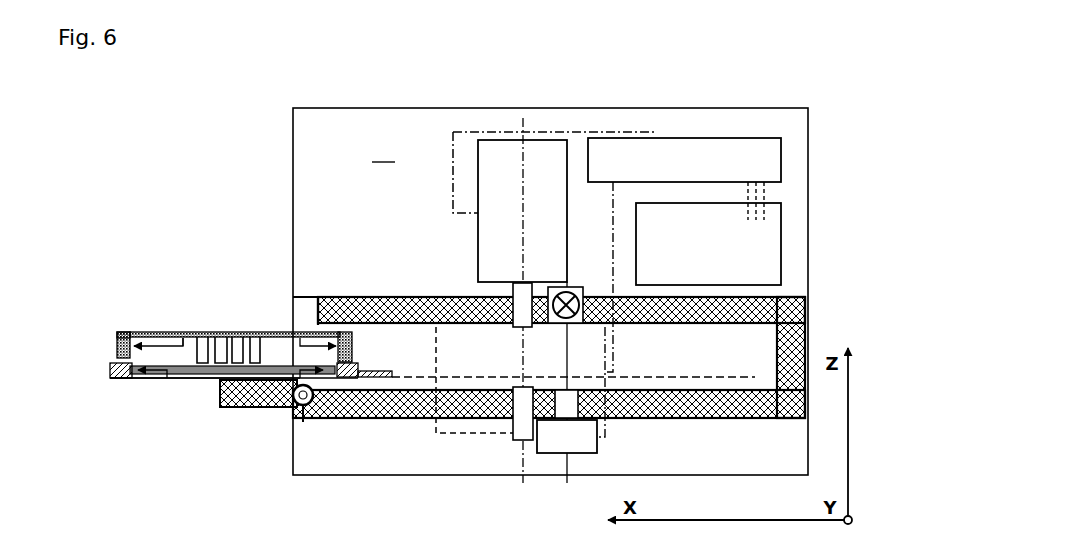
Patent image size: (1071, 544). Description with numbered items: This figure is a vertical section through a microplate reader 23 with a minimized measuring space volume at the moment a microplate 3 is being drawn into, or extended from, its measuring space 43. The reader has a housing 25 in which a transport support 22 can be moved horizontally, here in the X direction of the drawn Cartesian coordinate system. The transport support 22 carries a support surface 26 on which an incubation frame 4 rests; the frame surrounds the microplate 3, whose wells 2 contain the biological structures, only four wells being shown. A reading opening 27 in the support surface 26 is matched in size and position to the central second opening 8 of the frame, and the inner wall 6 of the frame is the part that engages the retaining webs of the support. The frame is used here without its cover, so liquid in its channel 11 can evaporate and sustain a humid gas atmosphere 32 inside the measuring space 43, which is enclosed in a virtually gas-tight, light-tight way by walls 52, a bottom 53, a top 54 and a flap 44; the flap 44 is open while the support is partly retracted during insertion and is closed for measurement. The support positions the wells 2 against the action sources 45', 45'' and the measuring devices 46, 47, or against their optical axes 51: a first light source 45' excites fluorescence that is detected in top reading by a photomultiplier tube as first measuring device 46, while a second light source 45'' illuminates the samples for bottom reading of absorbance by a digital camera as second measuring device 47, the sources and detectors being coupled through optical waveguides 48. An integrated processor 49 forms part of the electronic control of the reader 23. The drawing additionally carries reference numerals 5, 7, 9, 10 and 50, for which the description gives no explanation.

The wells 2 is at (218, 347).
The microplate 3 is at (155, 342).
The incubation frame 4 is at (108, 333).
The electrode contact 5 is at (183, 343).
The inner wall 6 is at (127, 345).
The lower electrode layer 7 is at (137, 372).
The second opening 8 is at (168, 373).
The support block 9 is at (117, 352).
The base plate 10 is at (118, 378).
The channel 11 is at (122, 333).
The transport support 22 is at (380, 372).
The microplate reader 23 is at (383, 152).
The housing 25 is at (292, 162).
The support surface 26 is at (275, 332).
The reading opening 27 is at (270, 398).
The humid gas atmosphere 32 is at (497, 353).
The measuring space 43 is at (497, 377).
The flap 44 is at (232, 406).
The action source 45' is at (537, 451).
The action source 45'' is at (557, 281).
The first measuring device 46 is at (489, 257).
The second measuring device 47 is at (556, 446).
The optical waveguides 48 is at (438, 296).
The processor 49 is at (686, 257).
The power supply 50 is at (686, 163).
The optical axis 51 is at (520, 215).
The walls 52 is at (790, 365).
The bottom 53 is at (677, 390).
The top 54 is at (670, 325).